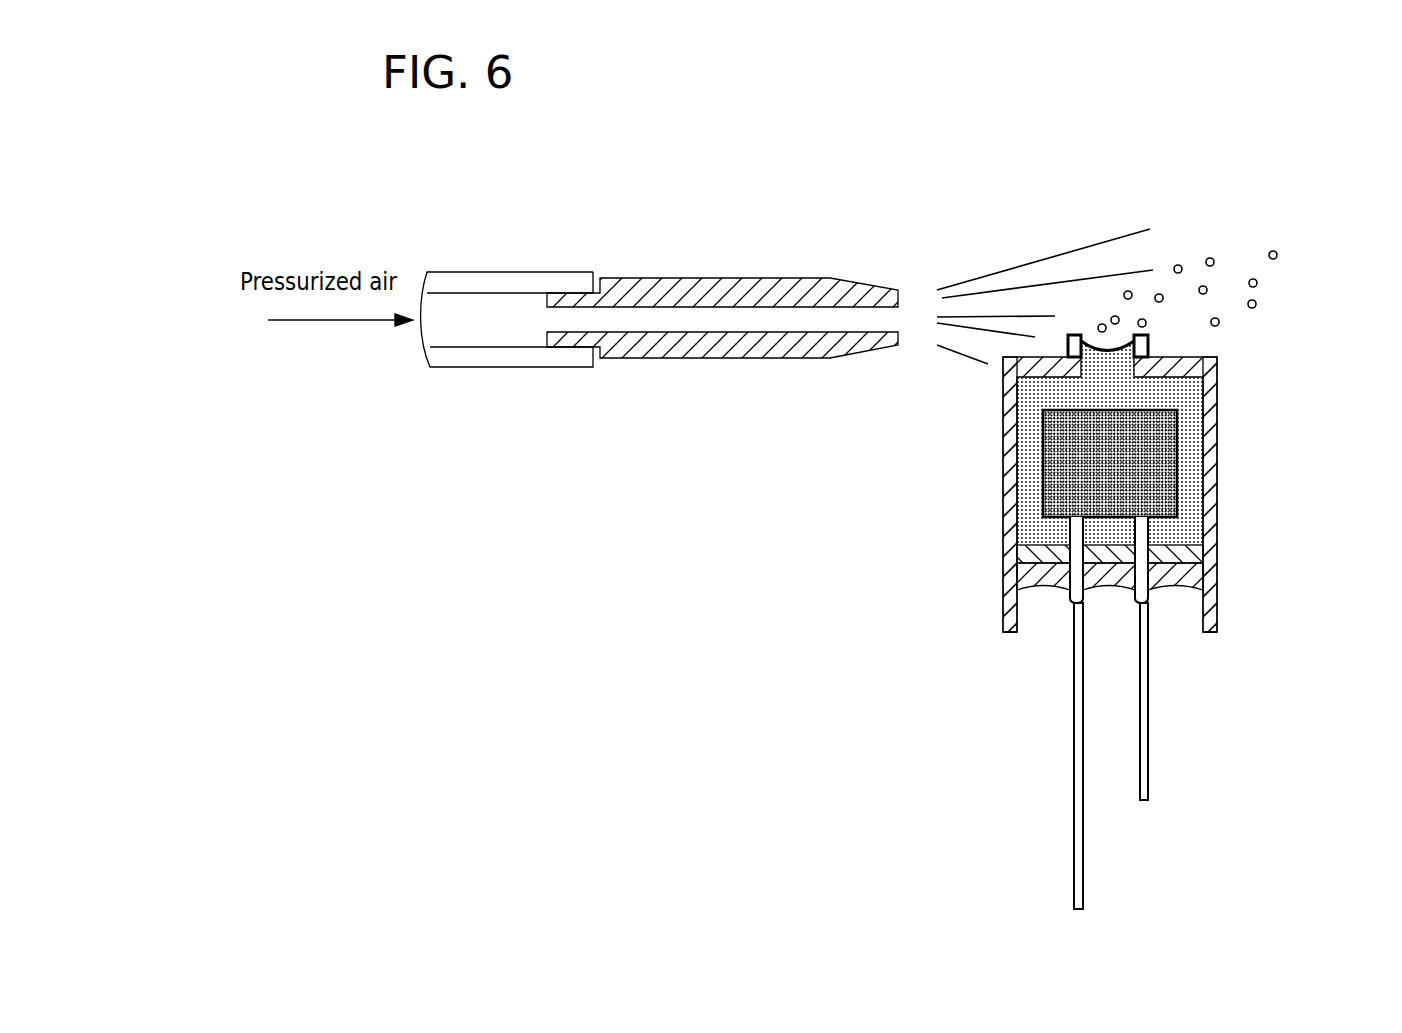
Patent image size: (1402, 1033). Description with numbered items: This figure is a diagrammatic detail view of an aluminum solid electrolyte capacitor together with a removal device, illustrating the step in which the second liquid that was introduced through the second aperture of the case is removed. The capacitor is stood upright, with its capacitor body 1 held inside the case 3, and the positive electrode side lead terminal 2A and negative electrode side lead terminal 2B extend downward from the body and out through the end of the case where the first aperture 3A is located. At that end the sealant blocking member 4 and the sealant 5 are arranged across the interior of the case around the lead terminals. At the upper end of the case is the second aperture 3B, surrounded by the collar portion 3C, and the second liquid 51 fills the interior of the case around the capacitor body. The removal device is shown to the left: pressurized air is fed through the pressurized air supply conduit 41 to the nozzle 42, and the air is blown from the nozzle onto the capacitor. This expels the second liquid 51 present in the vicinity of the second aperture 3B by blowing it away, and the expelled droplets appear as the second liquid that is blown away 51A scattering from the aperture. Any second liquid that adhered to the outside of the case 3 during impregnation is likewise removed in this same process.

The capacitor body 1 is at (1055, 437).
The positive electrode side lead terminal 2A is at (1074, 785).
The negative electrode side lead terminal 2B is at (1150, 770).
The case 3 is at (1010, 481).
The first aperture 3A is at (1157, 608).
The second aperture 3B is at (1092, 328).
The collar portion 3C is at (1150, 343).
The sealant blocking member 4 is at (1030, 553).
The sealant 5 is at (1040, 575).
The pressurized air supply conduit 41 is at (491, 283).
The nozzle 42 is at (712, 276).
The second liquid 51 is at (1187, 475).
The second liquid that is blown away 51A is at (1258, 282).